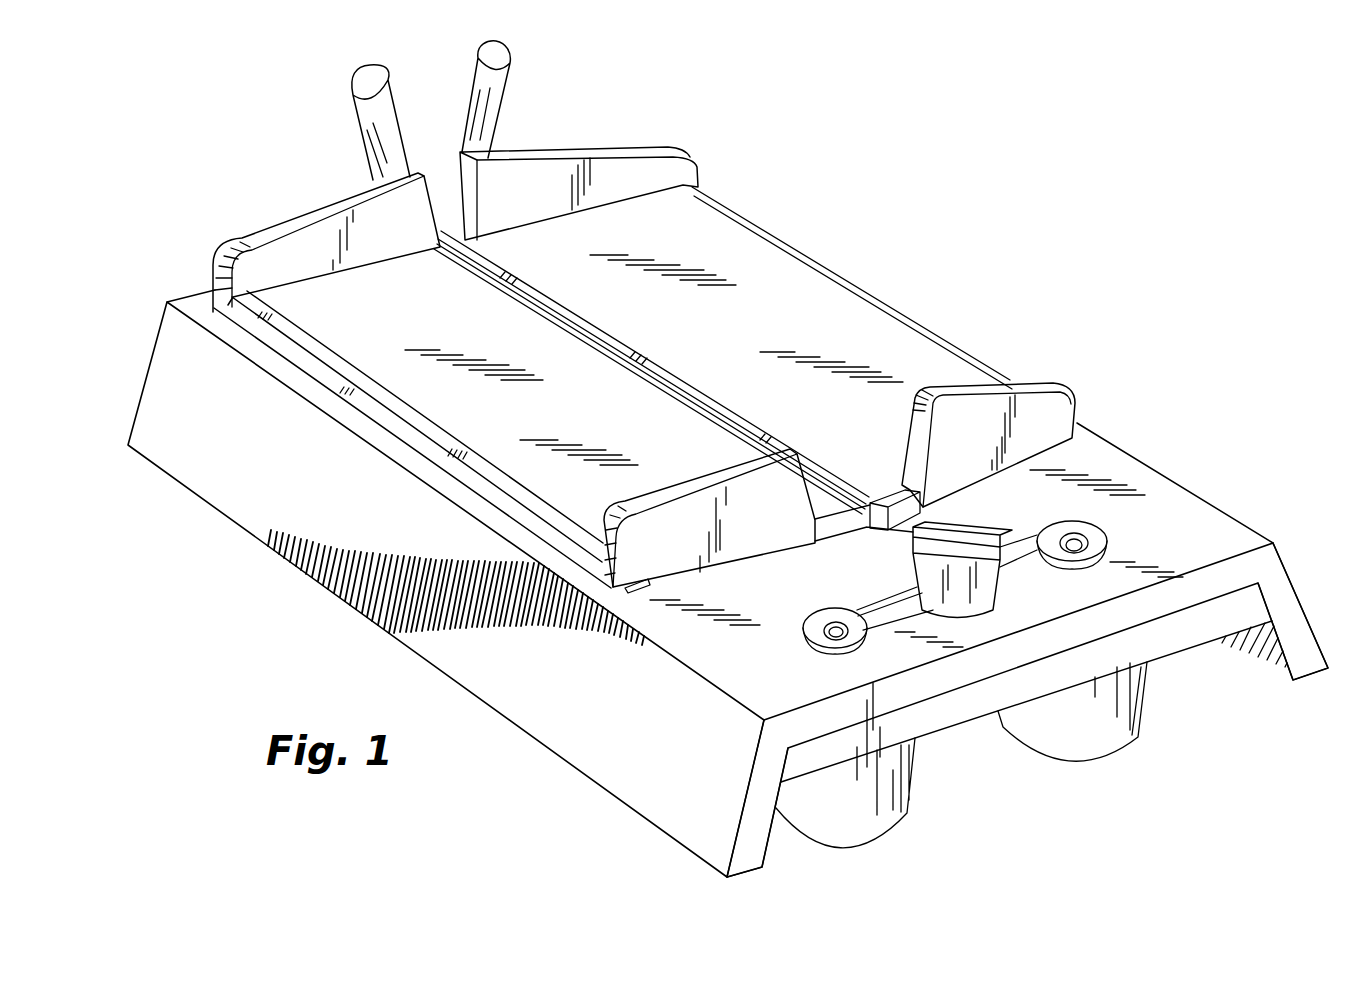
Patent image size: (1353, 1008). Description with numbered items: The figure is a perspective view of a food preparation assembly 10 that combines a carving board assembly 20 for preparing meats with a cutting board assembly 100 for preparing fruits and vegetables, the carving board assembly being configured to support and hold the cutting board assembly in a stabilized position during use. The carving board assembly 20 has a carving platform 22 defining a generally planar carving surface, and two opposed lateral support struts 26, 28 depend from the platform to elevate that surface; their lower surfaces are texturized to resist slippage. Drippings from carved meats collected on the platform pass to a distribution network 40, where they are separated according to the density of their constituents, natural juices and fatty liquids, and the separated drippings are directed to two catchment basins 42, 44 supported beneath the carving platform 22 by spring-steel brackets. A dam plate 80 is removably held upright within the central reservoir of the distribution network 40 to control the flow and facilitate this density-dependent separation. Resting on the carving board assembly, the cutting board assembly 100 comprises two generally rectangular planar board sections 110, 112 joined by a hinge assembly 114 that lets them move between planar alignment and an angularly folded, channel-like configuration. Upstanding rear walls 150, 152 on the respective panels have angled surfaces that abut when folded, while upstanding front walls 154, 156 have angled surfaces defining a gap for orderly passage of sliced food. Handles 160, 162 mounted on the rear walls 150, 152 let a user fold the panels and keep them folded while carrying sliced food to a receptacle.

The food preparation assembly 10 is at (998, 209).
The carving board assembly 20 is at (1118, 436).
The carving platform 22 is at (1182, 520).
The lateral support strut 26 is at (755, 833).
The lateral support strut 28 is at (1292, 617).
The distribution network 40 is at (847, 593).
The catchment basin 42 is at (908, 773).
The catchment basin 44 is at (1148, 692).
The dam plate 80 is at (960, 535).
The cutting board assembly 100 is at (777, 281).
The planar board section 110 is at (300, 307).
The planar board section 112 is at (840, 323).
The hinge assembly 114 is at (650, 372).
The upstanding rear wall 150 is at (317, 207).
The upstanding rear wall 152 is at (611, 153).
The upstanding front wall 154 is at (677, 483).
The upstanding front wall 156 is at (1030, 400).
The handle 160 is at (356, 110).
The handle 162 is at (510, 83).